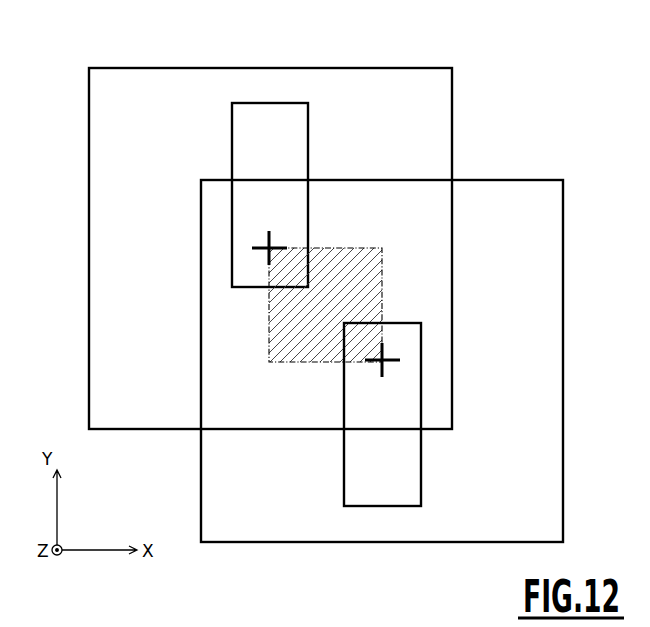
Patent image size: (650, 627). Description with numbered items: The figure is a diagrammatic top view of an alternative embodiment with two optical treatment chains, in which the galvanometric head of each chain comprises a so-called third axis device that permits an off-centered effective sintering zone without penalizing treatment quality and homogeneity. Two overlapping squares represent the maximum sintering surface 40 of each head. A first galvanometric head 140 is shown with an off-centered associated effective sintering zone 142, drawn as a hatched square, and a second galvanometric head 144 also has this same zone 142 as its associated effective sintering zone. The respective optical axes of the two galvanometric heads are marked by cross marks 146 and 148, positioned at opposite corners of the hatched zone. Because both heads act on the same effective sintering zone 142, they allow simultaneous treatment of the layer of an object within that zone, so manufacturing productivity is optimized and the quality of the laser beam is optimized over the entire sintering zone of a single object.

The maximum sintering surface 40 is at (388, 67).
The first galvanometric head 140 is at (264, 101).
The effective sintering zone 142 is at (340, 247).
The galvanometric head 144 is at (388, 507).
The optical axis mark 146 is at (256, 248).
The optical axis mark 148 is at (386, 362).